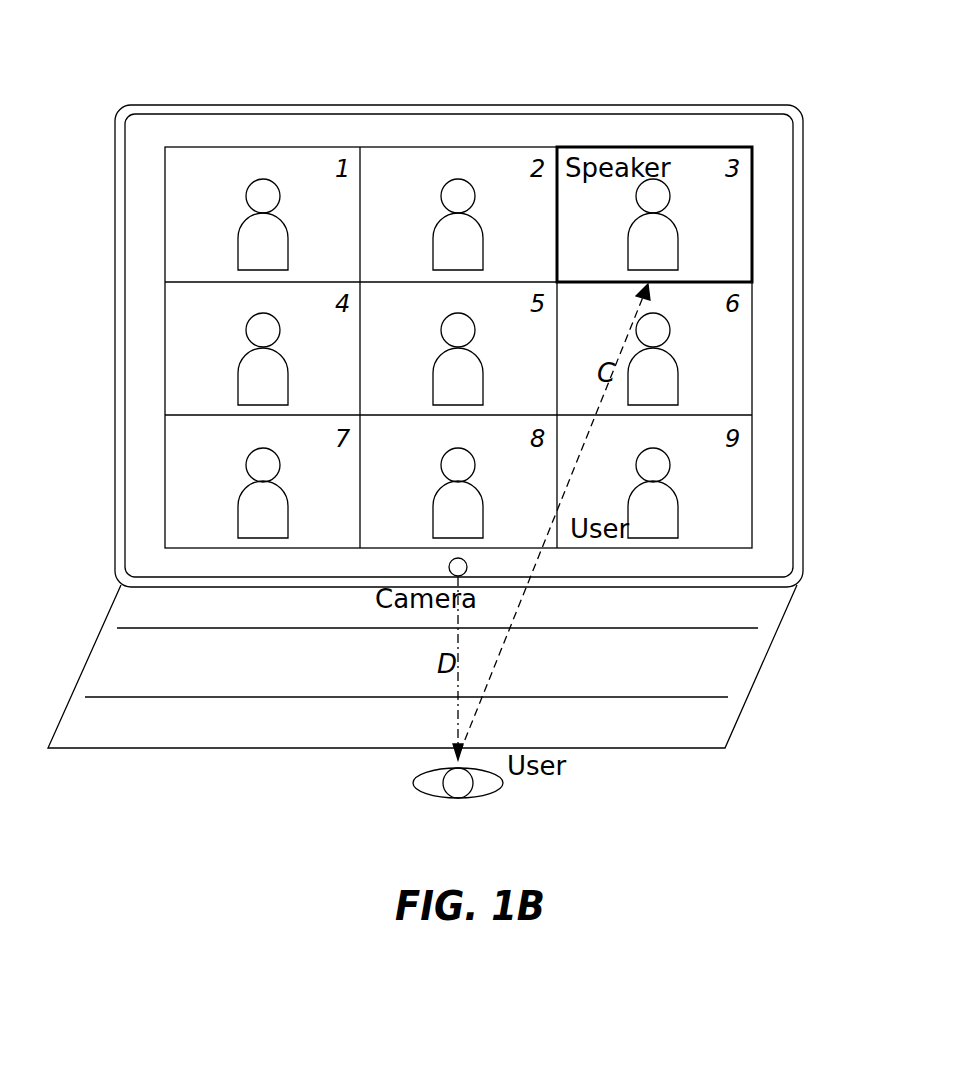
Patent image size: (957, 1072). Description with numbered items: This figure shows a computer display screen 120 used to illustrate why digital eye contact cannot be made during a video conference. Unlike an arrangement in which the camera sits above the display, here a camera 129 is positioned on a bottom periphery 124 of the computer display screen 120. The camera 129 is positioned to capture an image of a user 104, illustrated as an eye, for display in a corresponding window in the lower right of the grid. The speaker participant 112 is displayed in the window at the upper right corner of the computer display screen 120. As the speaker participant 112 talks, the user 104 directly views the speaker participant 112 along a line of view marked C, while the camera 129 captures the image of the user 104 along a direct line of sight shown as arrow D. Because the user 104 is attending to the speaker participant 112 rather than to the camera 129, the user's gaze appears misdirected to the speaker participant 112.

The computer display screen 120 is at (808, 90).
The bottom periphery 124 is at (210, 587).
The speaker participant 112 is at (671, 197).
The user 104 is at (670, 468).
The camera 129 is at (413, 613).